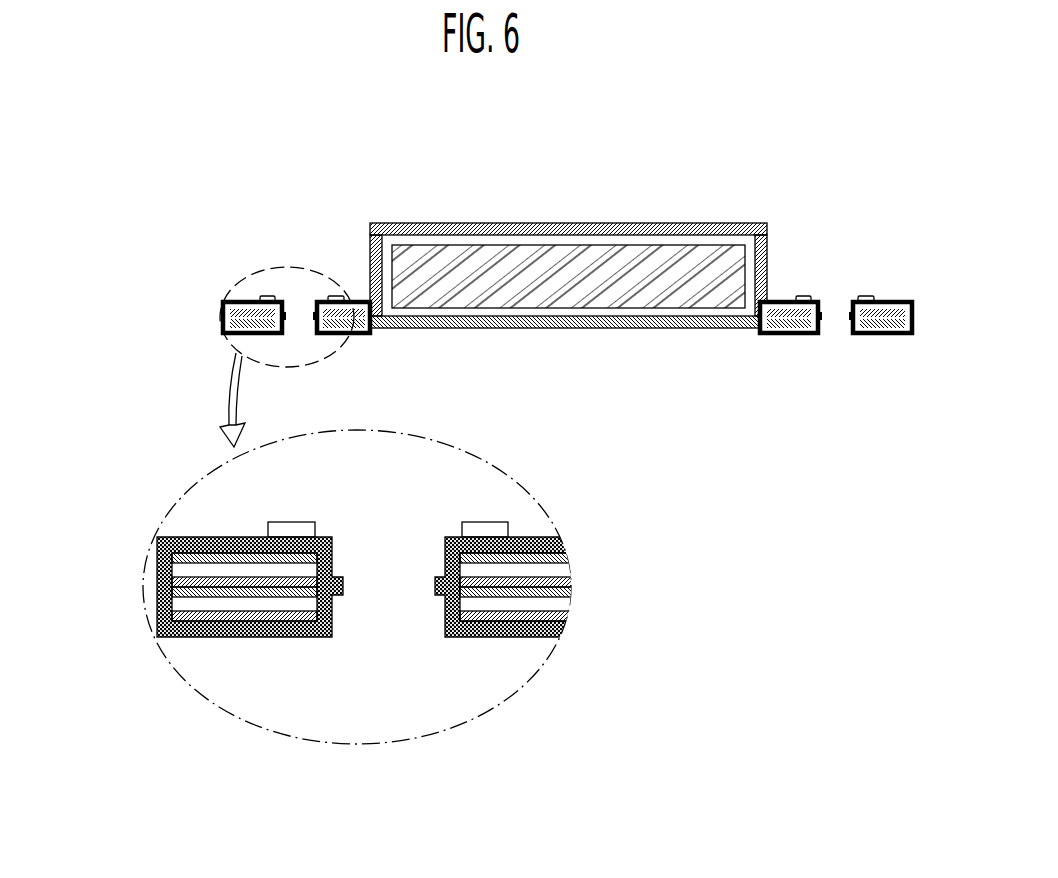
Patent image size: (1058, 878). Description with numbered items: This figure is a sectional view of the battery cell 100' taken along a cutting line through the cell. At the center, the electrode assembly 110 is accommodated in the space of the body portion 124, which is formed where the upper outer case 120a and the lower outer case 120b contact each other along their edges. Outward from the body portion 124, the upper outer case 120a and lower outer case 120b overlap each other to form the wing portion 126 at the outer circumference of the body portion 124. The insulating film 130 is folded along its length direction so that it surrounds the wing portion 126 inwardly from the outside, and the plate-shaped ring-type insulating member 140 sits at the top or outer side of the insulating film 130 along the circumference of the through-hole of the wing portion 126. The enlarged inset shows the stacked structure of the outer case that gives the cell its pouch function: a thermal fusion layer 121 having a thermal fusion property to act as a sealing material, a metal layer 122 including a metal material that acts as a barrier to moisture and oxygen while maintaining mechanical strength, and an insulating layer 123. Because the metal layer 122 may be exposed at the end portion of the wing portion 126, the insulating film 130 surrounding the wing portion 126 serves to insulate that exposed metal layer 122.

The battery cell 100' is at (834, 157).
The electrode assembly 110 is at (566, 266).
The upper outer case 120a is at (661, 229).
The lower outer case 120b is at (672, 330).
The body portion 124 is at (575, 338).
The wing portion 126 is at (333, 340).
The insulating film 130 is at (222, 327).
The plate-shaped ring-type insulating member 140 is at (256, 297).
The thermal fusion layer 121 is at (174, 581).
The metal layer 122 is at (172, 558).
The insulating layer 123 is at (160, 548).